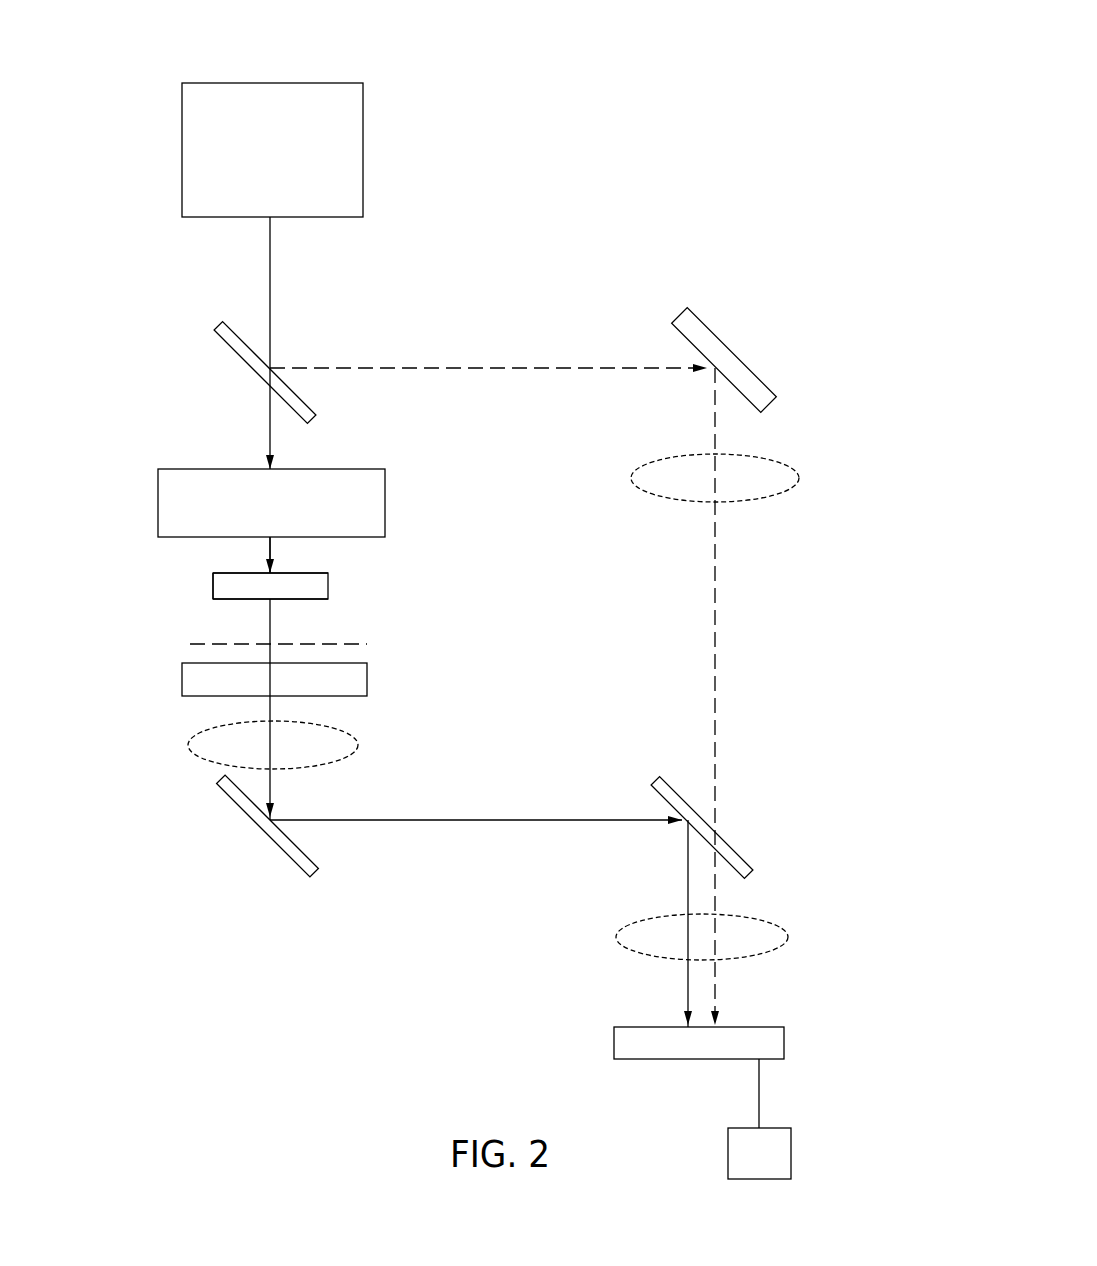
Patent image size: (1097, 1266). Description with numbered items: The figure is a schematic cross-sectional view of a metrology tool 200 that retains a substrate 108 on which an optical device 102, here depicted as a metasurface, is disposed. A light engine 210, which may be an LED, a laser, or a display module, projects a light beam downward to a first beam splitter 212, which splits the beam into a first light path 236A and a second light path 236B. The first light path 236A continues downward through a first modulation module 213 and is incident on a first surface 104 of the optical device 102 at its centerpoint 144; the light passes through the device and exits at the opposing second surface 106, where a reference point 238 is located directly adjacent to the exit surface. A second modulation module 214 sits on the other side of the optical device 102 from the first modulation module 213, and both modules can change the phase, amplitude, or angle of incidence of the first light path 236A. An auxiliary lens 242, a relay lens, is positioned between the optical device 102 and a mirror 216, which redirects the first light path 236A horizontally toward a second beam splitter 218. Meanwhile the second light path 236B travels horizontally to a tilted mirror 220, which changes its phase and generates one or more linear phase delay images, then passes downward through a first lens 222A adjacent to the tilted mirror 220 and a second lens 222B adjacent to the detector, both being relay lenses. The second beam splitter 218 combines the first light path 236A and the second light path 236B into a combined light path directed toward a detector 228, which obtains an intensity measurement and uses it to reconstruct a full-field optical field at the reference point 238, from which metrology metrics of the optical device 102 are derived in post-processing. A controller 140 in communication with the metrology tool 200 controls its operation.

The metrology tool 200 is at (770, 50).
The light engine 210 is at (292, 168).
The first beam splitter 212 is at (238, 355).
The first modulation module 213 is at (292, 521).
The first light path 236A is at (312, 447).
The second light path 236B is at (495, 335).
The tilted mirror 220 is at (742, 355).
The first lens 222A is at (800, 478).
The optical device 102 is at (365, 596).
The first surface 104 is at (215, 572).
The second surface 106 is at (215, 598).
The substrate 108 is at (213, 586).
The centerpoint 144 is at (273, 545).
The reference point 238 is at (367, 644).
The second modulation module 214 is at (367, 680).
The auxiliary lens 242 is at (358, 745).
The mirror 216 is at (268, 845).
The second beam splitter 218 is at (730, 848).
The second lens 222B is at (788, 937).
The detector 228 is at (678, 1060).
The controller 140 is at (781, 1170).